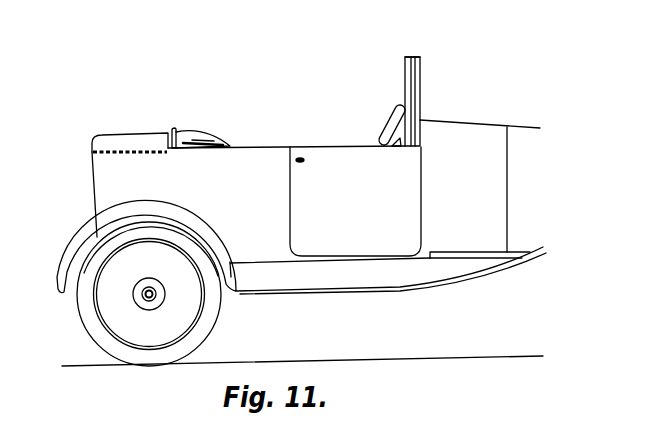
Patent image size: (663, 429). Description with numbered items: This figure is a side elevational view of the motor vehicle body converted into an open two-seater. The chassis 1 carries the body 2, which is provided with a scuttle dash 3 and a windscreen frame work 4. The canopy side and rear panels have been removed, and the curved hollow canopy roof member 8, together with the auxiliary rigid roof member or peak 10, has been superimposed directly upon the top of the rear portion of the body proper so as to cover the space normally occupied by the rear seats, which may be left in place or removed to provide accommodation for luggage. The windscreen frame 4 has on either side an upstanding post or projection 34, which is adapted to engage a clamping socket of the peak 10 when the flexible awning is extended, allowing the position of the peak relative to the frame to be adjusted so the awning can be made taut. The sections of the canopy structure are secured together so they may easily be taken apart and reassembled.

The chassis 1 is at (264, 294).
The body 2 is at (311, 191).
The scuttle dash 3 is at (483, 133).
The windscreen frame work 4 is at (418, 99).
The upstanding post 34 is at (418, 55).
The curved hollow roof member 8 is at (128, 137).
The auxiliary rigid roof member or peak 10 is at (198, 138).